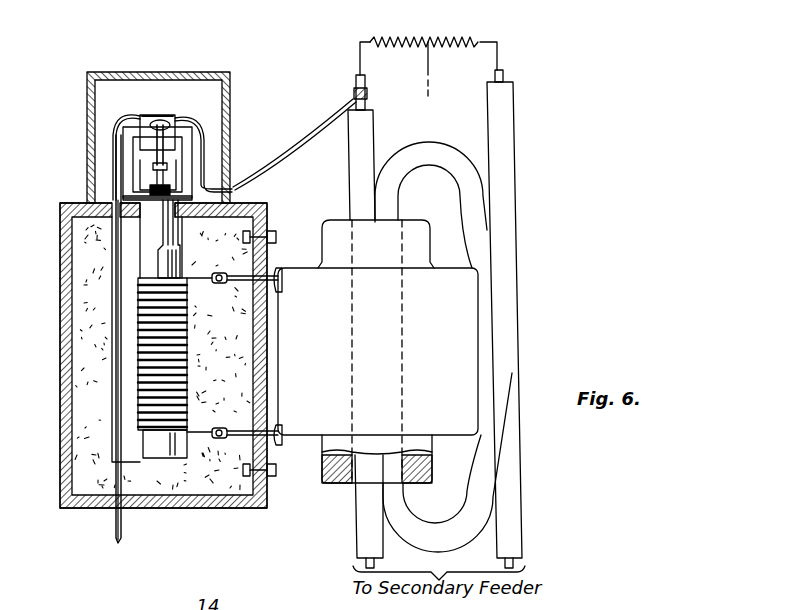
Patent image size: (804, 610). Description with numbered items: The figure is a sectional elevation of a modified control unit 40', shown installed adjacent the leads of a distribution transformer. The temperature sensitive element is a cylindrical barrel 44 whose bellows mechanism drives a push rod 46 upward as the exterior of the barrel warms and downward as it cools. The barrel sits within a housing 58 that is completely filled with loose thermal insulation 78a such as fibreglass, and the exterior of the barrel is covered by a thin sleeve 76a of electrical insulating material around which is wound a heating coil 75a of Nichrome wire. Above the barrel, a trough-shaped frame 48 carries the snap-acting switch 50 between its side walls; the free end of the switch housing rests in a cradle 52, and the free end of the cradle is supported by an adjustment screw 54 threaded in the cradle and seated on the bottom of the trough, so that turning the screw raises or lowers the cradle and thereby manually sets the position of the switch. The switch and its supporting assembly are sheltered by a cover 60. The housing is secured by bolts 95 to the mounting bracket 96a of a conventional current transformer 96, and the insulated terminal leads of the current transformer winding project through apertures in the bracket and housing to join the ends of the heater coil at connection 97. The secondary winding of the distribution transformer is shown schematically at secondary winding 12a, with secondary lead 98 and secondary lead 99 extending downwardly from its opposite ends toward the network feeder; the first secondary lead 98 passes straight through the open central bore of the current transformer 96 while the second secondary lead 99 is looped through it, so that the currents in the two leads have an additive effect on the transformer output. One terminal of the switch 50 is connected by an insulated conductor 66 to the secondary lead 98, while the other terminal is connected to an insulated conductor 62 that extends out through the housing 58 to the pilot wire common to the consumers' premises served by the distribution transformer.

The control unit 40' is at (137, 355).
The housing 58 is at (63, 326).
The insulated conductor 62 is at (114, 352).
The cylindrical barrel 44 is at (181, 233).
The push rod 46 is at (157, 209).
The sleeve 76a is at (186, 262).
The heating coil 75a is at (190, 339).
The thermal insulation 78a is at (110, 442).
The connection 97 is at (220, 284).
The bolts 95 is at (276, 238).
The mounting bracket 96a is at (284, 285).
The cover 60 is at (160, 72).
The cradle 52 is at (150, 181).
The snap-acting switch 50 is at (176, 118).
The adjustment screw 54 is at (150, 115).
The trough-shaped frame 48 is at (203, 165).
The insulated conductor 66 is at (292, 143).
The secondary lead 98 is at (376, 136).
The secondary lead 99 is at (514, 108).
The secondary winding 12a is at (466, 42).
The current transformer 96 is at (395, 347).